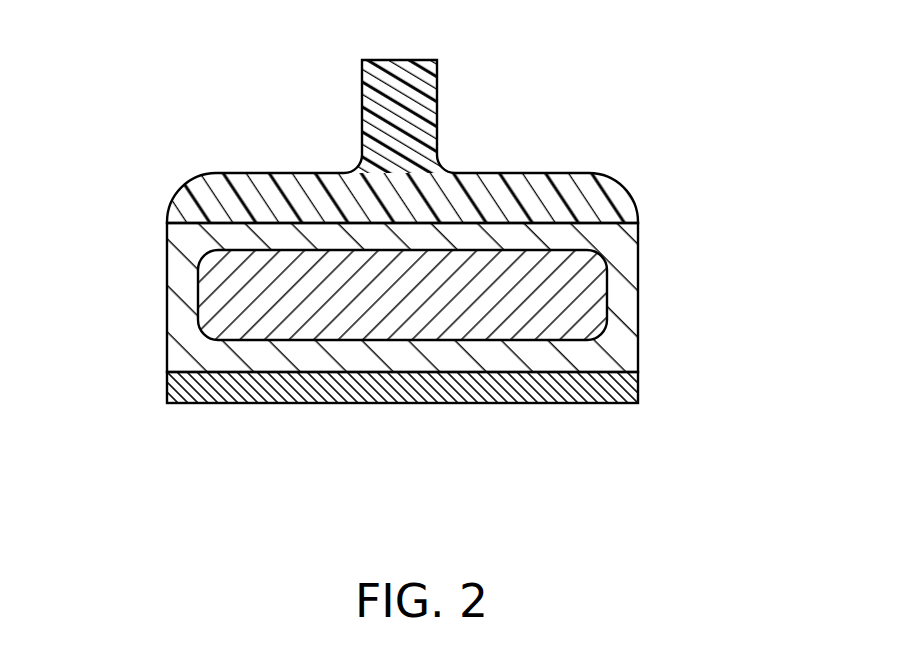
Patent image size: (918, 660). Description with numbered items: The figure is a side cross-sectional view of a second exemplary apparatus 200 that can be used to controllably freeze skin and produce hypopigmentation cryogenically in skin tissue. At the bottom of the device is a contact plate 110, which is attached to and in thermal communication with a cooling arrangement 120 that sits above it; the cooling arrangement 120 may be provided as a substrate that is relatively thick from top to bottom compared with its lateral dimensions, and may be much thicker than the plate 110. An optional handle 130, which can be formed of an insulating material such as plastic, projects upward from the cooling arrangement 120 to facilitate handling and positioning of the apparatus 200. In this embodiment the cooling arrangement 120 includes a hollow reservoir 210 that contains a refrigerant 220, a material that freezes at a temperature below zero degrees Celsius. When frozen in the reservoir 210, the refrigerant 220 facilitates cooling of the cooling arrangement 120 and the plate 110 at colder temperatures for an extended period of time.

The apparatus 200 is at (427, 269).
The contact plate 110 is at (183, 404).
The cooling arrangement 120 is at (390, 297).
The handle 130 is at (535, 173).
The hollow reservoir 210 is at (197, 286).
The refrigerant 220 is at (215, 309).